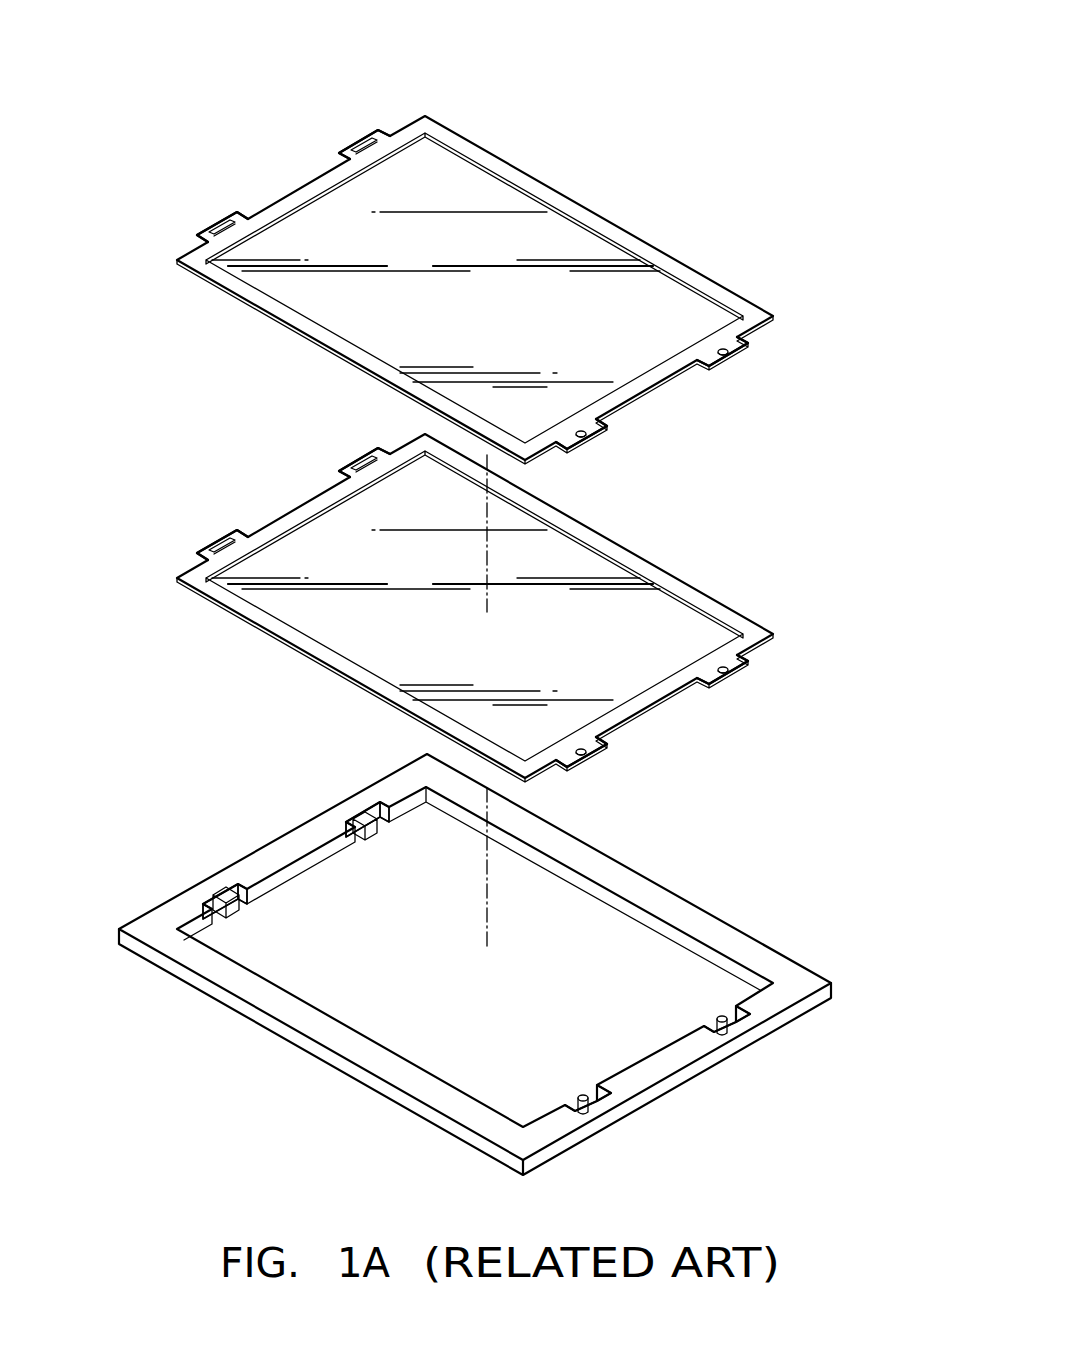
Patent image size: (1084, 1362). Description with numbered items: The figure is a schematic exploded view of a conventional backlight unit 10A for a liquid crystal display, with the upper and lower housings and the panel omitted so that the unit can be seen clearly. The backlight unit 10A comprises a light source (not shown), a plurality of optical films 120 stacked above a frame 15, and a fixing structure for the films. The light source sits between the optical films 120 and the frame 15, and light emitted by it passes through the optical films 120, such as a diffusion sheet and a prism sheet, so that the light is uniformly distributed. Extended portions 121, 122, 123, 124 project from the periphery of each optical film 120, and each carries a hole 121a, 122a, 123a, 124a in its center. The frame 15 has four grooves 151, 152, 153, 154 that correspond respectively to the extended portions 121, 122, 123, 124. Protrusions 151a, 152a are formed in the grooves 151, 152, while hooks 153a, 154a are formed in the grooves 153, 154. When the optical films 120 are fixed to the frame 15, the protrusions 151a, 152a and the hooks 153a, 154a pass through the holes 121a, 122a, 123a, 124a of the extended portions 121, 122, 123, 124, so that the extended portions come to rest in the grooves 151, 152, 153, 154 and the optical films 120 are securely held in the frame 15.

The backlight unit 10A is at (128, 37).
The optical films 120 is at (872, 315).
The extended portion 121 is at (750, 346).
The hole 121a is at (730, 356).
The extended portion 122 is at (610, 430).
The hole 122a is at (590, 440).
The extended portion 123 is at (366, 130).
The hole 123a is at (355, 148).
The extended portion 124 is at (232, 212).
The hole 124a is at (219, 227).
The frame 15 is at (720, 940).
The groove 151 is at (751, 1016).
The protrusion 151a is at (726, 1034).
The groove 152 is at (612, 1094).
The protrusion 152a is at (587, 1114).
The groove 153 is at (340, 818).
The hook 153a is at (366, 808).
The groove 154 is at (205, 896).
The hook 154a is at (228, 890).